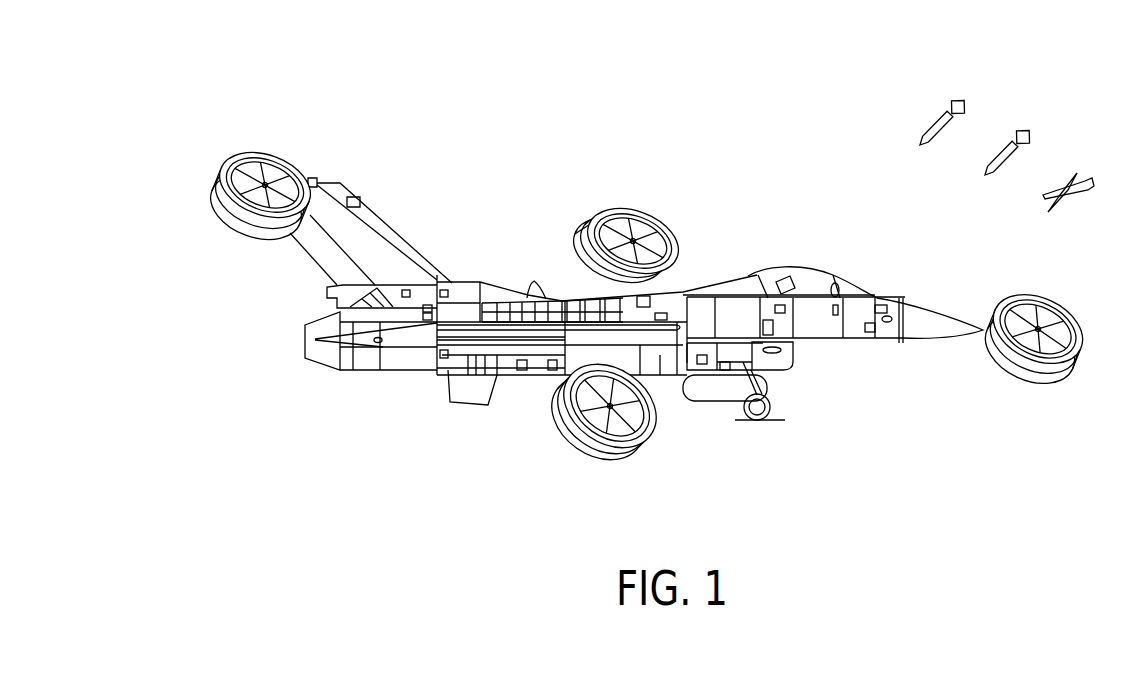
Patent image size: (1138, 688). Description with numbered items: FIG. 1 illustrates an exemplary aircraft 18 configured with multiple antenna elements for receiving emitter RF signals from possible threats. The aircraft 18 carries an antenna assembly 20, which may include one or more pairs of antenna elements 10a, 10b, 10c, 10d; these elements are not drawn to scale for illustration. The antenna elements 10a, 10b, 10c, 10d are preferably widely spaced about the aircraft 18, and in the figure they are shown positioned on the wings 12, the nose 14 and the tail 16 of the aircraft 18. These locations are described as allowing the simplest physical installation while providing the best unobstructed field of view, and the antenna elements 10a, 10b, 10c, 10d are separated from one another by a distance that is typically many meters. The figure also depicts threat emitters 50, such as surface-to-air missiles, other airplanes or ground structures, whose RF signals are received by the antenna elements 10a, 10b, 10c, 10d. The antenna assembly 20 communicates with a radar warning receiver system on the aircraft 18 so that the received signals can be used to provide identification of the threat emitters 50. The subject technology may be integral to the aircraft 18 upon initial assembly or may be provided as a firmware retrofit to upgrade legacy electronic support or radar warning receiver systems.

The antenna element 10a is at (615, 224).
The antenna element 10b is at (622, 456).
The antenna element 10c is at (1031, 294).
The antenna element 10d is at (250, 167).
The wings 12 is at (535, 372).
The nose 14 is at (935, 318).
The tail 16 is at (357, 192).
The aircraft 18 is at (758, 177).
The antenna assembly 20 is at (300, 150).
The threat emitters 50 is at (962, 97).